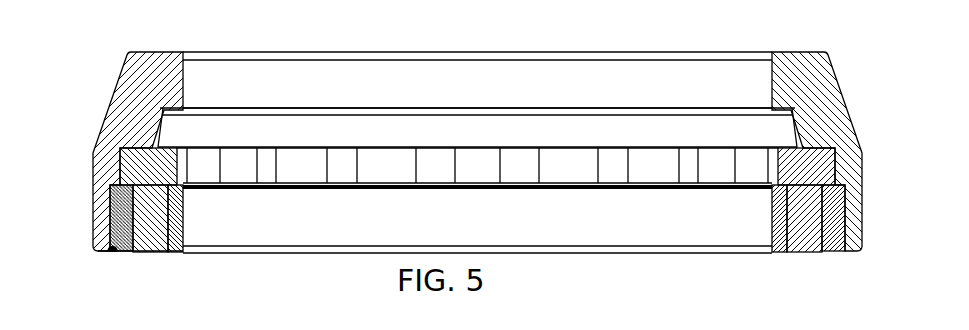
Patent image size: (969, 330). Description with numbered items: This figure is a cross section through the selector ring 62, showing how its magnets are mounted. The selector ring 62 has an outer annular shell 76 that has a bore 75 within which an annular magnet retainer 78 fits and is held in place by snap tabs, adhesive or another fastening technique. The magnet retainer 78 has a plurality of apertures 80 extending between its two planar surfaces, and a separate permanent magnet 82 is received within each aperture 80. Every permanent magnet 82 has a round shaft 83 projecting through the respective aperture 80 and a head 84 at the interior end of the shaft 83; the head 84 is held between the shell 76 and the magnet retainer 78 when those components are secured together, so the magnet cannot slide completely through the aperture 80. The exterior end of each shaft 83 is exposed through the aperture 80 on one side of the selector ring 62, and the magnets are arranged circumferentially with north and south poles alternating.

The selector ring 62 is at (118, 66).
The outer annular shell 76 is at (125, 100).
The head 84 is at (142, 157).
The permanent magnet 82 is at (136, 179).
The round shaft 83 is at (136, 223).
The aperture 80 is at (168, 244).
The annular magnet retainer 78 is at (178, 228).
The bore 75 is at (112, 252).